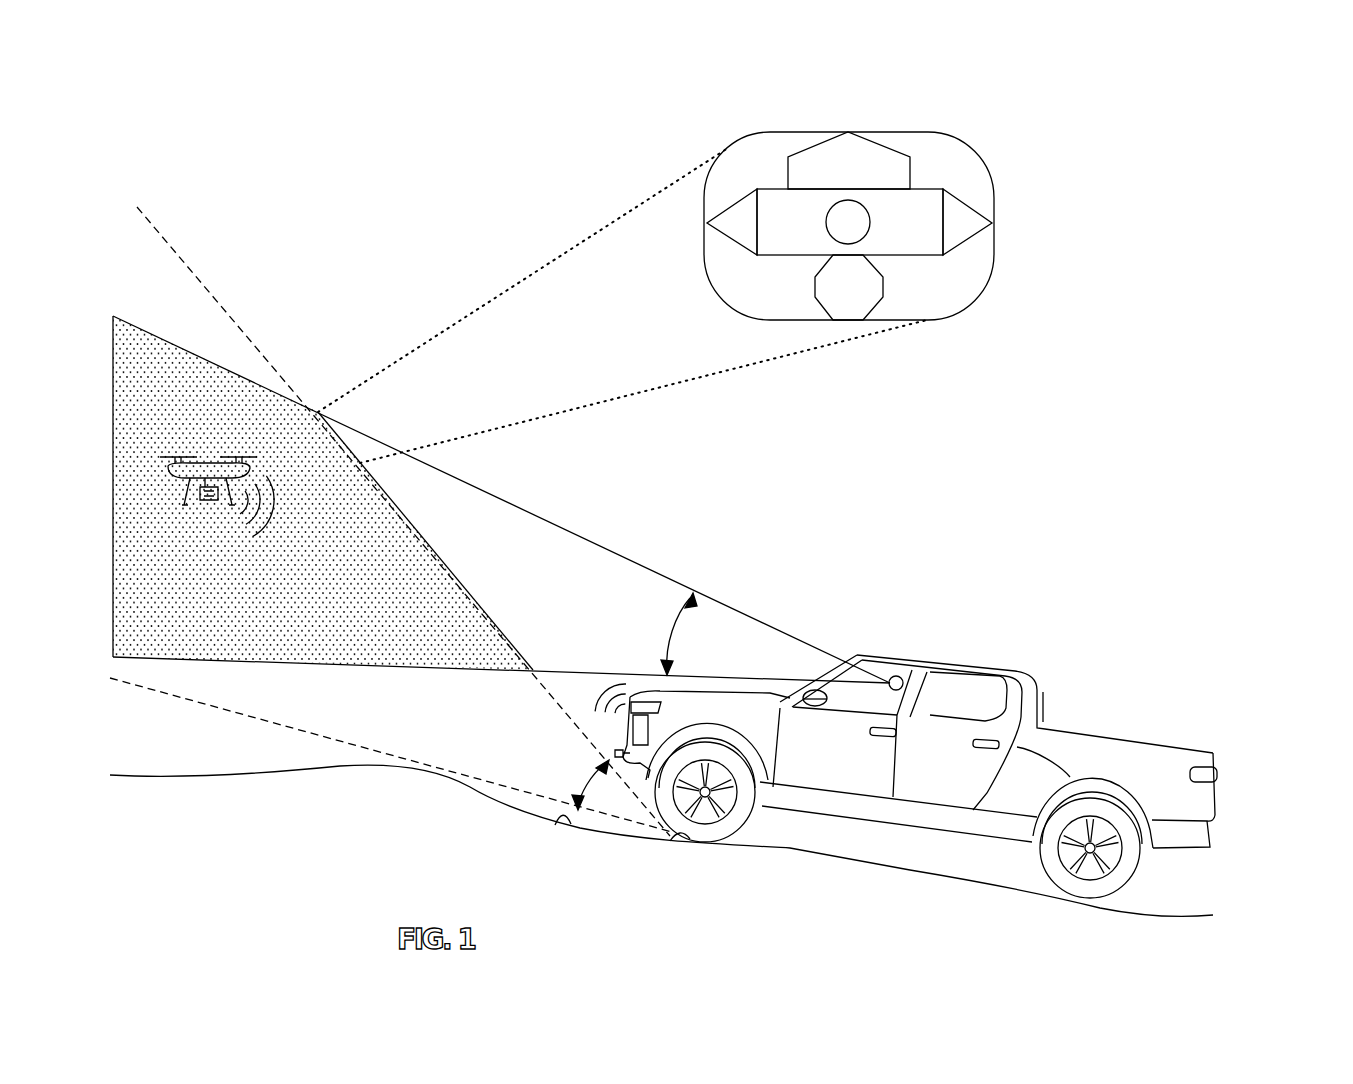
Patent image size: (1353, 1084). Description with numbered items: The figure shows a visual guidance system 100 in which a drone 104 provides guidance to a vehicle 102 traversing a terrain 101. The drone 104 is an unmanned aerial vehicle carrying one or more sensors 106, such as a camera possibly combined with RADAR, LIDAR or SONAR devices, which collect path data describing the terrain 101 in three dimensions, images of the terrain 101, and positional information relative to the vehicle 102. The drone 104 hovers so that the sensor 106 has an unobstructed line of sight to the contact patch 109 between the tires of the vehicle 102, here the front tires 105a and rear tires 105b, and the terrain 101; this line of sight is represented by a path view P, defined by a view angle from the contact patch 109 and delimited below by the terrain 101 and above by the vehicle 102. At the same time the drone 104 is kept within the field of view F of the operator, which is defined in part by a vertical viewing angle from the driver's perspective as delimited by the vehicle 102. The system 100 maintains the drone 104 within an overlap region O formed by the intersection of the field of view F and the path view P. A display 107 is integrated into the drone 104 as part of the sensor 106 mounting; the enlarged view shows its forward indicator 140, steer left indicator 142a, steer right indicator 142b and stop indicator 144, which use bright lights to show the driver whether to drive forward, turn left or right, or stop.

The visual guidance system 100 is at (1252, 75).
The terrain 101 is at (561, 818).
The vehicle 102 is at (967, 672).
The drone 104 is at (215, 462).
The front tires 105a is at (750, 824).
The rear tires 105b is at (1127, 872).
The sensor 106 is at (873, 215).
The display 107 is at (742, 125).
The contact patch 109 is at (672, 840).
The forward indicator 140 is at (843, 163).
The steer left indicator 142a is at (730, 215).
The steer right indicator 142b is at (958, 225).
The stop indicator 144 is at (865, 295).
The field of view F is at (545, 545).
The overlap region O is at (360, 497).
The path view P is at (460, 728).